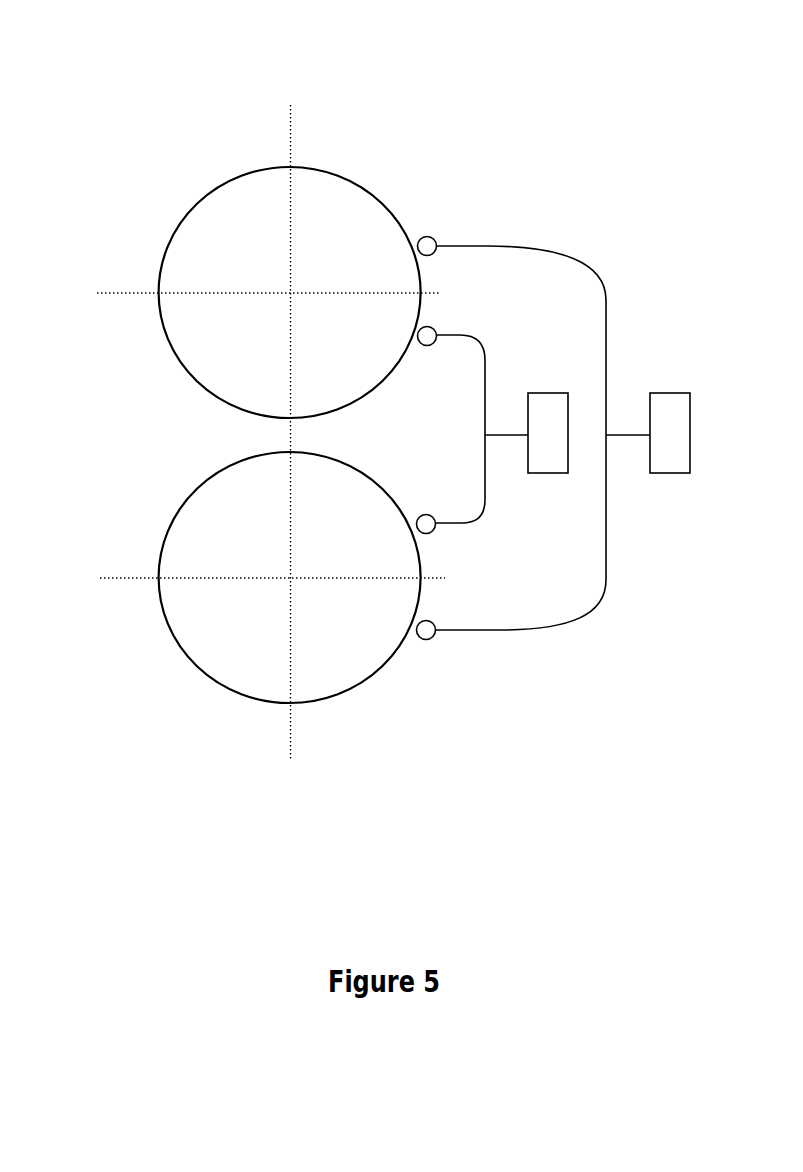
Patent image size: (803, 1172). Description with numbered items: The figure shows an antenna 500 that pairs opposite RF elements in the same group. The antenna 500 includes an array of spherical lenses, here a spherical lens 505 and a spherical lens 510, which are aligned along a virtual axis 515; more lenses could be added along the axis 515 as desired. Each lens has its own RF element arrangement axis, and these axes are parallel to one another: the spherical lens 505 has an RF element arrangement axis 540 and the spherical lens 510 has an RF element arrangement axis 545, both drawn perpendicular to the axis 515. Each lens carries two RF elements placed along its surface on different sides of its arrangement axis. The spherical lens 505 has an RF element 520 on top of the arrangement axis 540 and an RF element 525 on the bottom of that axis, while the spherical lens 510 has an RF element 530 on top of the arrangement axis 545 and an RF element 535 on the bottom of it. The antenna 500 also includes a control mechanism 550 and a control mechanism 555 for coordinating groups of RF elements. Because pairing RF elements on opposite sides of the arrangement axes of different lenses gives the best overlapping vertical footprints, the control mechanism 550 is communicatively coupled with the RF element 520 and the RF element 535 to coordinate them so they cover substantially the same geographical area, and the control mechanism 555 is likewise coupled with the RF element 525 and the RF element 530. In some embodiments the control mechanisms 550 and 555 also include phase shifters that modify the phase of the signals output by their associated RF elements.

The antenna 500 is at (135, 58).
The spherical lens 505 is at (184, 214).
The spherical lens 510 is at (185, 504).
The axis 515 is at (290, 116).
The RF element 520 is at (427, 237).
The RF element 525 is at (425, 346).
The RF element 530 is at (420, 515).
The RF element 535 is at (418, 641).
The RF element arrangement axis 540 is at (107, 293).
The RF element arrangement axis 545 is at (113, 578).
The control mechanism 550 is at (670, 392).
The control mechanism 555 is at (548, 393).